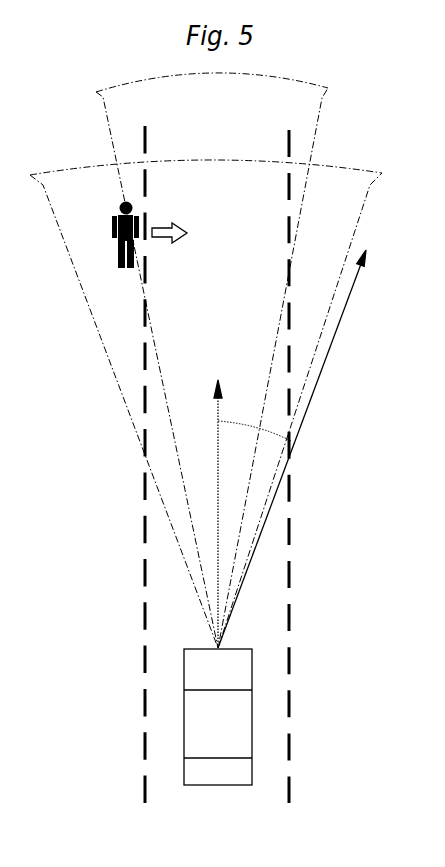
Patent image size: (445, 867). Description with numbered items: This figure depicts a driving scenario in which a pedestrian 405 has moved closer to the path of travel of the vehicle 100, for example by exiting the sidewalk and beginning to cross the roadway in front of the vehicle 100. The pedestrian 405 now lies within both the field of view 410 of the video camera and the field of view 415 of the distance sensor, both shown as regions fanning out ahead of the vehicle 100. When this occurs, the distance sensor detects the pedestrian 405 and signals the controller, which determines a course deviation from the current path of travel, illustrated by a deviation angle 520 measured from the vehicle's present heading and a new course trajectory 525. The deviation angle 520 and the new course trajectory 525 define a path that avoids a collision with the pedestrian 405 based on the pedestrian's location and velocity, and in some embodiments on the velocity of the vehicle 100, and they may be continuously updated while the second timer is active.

The vehicle 100 is at (222, 786).
The pedestrian 405 is at (109, 217).
The field of view of the video camera 410 is at (129, 417).
The field of view of the distance sensor 415 is at (103, 114).
The deviation angle 520 is at (255, 430).
The new course trajectory 525 is at (354, 282).